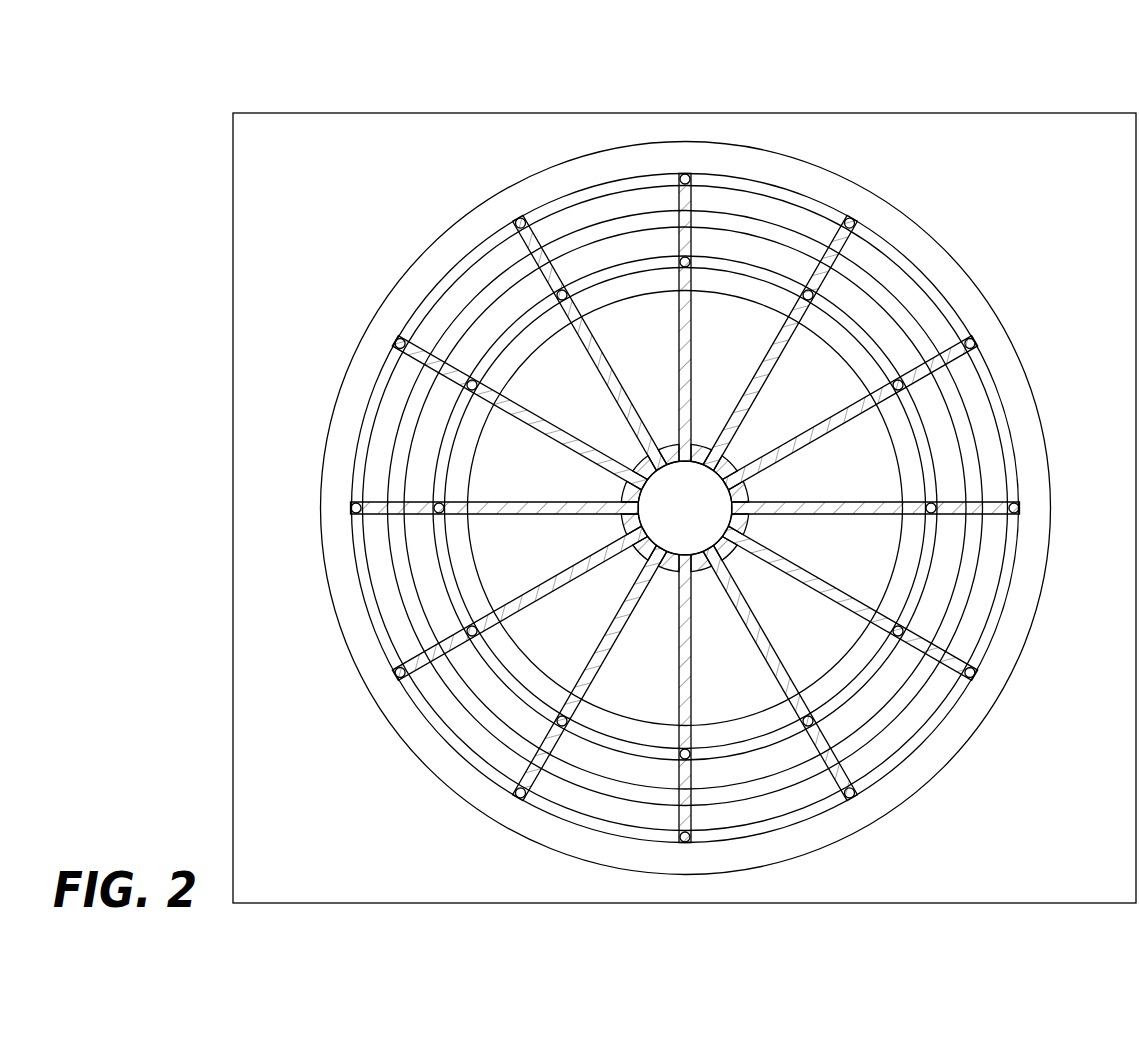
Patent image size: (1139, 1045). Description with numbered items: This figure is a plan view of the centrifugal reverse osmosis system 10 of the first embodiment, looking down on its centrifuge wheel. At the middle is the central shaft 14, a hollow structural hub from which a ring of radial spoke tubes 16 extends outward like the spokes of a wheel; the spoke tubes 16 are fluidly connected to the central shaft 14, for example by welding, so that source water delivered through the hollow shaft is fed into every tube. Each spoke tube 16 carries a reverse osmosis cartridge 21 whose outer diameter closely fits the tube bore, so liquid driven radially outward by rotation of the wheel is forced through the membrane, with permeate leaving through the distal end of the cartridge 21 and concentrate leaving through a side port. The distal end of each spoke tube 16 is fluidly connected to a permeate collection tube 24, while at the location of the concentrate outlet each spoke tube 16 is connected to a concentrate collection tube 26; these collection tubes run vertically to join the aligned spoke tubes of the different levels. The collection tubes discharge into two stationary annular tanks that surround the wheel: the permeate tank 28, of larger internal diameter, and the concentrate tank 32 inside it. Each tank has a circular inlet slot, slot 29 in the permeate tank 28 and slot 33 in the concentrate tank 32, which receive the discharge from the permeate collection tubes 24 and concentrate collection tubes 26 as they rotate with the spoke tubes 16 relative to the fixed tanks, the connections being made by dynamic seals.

The centrifugal reverse osmosis system 10 is at (494, 92).
The central shaft 14 is at (747, 490).
The spoke tube 16 is at (628, 425).
The reverse osmosis cartridge 21 is at (692, 343).
The permeate collection tube 24 is at (973, 682).
The concentrate collection tube 26 is at (883, 633).
The permeate tank 28 is at (972, 278).
The circular inlet slot 29 is at (822, 197).
The concentrate tank 32 is at (952, 412).
The circular inlet slot 33 is at (932, 582).